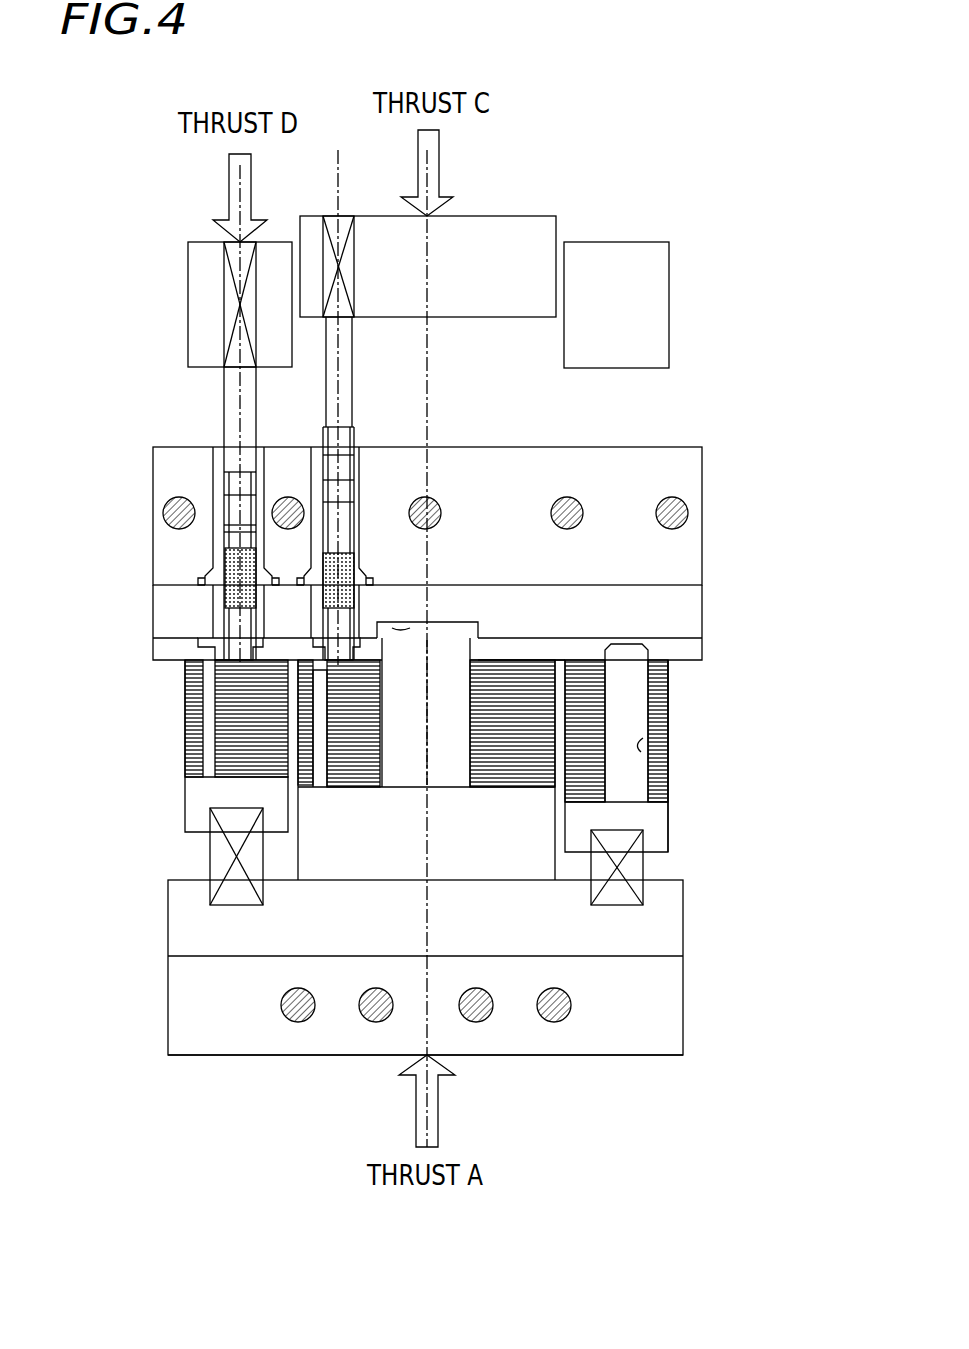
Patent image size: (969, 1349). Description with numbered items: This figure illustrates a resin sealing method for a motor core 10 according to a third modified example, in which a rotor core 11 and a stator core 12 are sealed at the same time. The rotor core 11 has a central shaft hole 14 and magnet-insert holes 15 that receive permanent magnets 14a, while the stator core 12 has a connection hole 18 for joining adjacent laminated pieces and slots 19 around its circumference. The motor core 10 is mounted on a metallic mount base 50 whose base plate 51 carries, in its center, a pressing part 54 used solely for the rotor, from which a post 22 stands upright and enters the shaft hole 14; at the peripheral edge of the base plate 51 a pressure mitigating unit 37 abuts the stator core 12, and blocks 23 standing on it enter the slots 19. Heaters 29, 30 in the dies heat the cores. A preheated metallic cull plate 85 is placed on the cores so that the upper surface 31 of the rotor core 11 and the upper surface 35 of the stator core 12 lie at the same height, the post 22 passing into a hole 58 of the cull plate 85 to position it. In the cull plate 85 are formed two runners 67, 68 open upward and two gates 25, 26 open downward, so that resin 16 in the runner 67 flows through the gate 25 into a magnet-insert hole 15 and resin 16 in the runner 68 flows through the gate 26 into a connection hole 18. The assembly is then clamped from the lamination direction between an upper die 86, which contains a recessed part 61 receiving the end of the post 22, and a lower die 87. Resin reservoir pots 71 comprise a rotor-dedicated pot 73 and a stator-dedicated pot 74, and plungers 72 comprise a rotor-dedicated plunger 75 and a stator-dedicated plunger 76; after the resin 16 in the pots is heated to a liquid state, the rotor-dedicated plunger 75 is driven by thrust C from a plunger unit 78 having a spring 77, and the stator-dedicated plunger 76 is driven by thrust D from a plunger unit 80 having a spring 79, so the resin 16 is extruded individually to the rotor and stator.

The motor core 10 is at (712, 785).
The rotor core 11 is at (477, 630).
The stator core 12 is at (670, 788).
The shaft hole 14 is at (462, 698).
The permanent magnets 14a is at (318, 752).
The magnet-insert holes 15 is at (300, 760).
The resin 16 is at (232, 583).
The connection hole 18 is at (210, 703).
The slots 19 is at (670, 754).
The post 22 is at (443, 658).
The blocks 23 is at (630, 713).
The gate 25 is at (330, 665).
The gate 26 is at (193, 676).
The heater 29 is at (370, 1026).
The heater 30 is at (665, 494).
The upper surface of the rotor core 31 is at (540, 656).
The upper surface of the stator core 35 is at (590, 658).
The pressure mitigating unit 37 is at (686, 858).
The mount base 50 is at (690, 908).
The base plate 51 is at (668, 946).
The pressing part used solely for the rotor 54 is at (335, 845).
The hole 58 is at (515, 658).
The recessed part 61 is at (405, 626).
The runner 67 is at (203, 641).
The runner 68 is at (200, 645).
The resin reservoir pots 71 is at (193, 565).
The plungers 72 is at (189, 513).
The rotor-dedicated pot 73 is at (228, 555).
The stator-dedicated pot 74 is at (198, 573).
The rotor-dedicated plunger 75 is at (317, 465).
The stator-dedicated plunger 76 is at (220, 483).
The spring 77 is at (336, 228).
The plunger unit 78 is at (350, 214).
The spring 79 is at (226, 287).
The plunger unit 80 is at (190, 222).
The cull plate 85 is at (708, 663).
The upper die 86 is at (708, 447).
The lower die 87 is at (692, 1000).